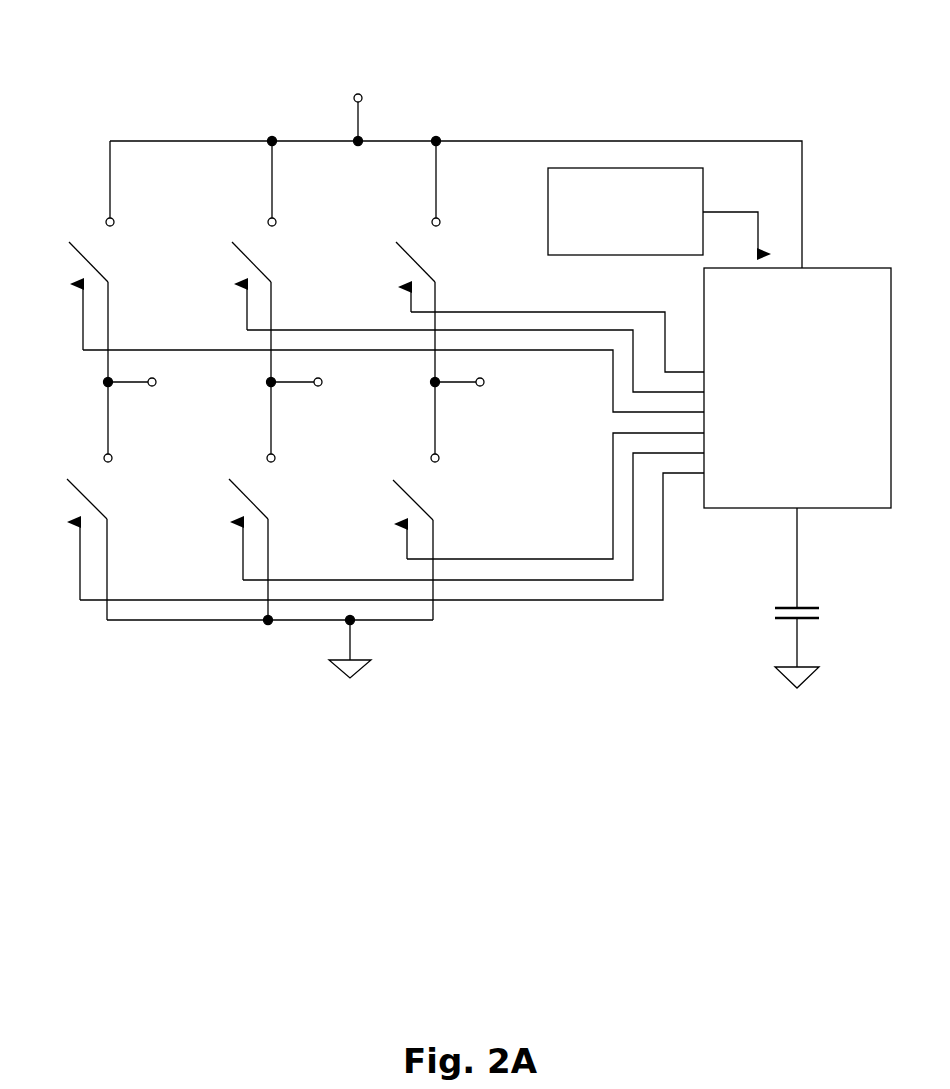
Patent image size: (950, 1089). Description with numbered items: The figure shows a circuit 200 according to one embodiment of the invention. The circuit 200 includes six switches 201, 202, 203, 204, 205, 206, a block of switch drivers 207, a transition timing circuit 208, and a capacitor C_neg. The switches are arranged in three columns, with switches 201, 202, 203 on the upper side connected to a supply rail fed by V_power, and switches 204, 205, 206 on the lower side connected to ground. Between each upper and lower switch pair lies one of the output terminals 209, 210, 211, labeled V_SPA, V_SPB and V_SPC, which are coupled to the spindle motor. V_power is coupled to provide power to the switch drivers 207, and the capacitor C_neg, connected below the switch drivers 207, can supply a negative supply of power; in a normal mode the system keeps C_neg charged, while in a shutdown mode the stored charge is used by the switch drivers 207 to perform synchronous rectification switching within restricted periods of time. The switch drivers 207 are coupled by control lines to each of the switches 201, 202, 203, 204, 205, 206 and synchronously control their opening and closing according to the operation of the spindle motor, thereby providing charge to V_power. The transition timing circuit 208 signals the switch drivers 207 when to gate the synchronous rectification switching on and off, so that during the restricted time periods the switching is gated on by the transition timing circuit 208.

The circuit 200 is at (823, 55).
The switch 201 is at (81, 241).
The switch 202 is at (244, 241).
The switch 203 is at (413, 245).
The switch 204 is at (78, 478).
The switch 205 is at (240, 479).
The switch 206 is at (407, 481).
The switch drivers 207 is at (778, 389).
The transition timing circuit 208 is at (622, 168).
The output terminal 209 is at (155, 377).
The output terminal 210 is at (326, 371).
The output terminal 211 is at (485, 373).